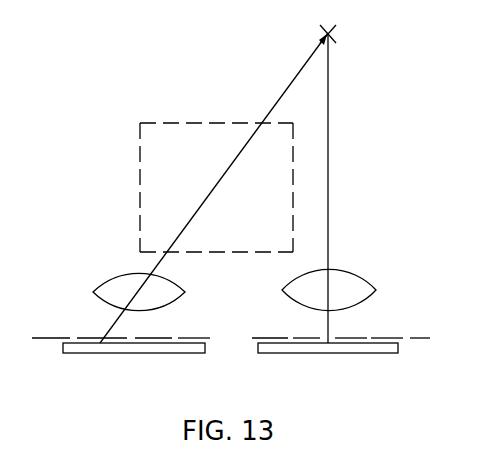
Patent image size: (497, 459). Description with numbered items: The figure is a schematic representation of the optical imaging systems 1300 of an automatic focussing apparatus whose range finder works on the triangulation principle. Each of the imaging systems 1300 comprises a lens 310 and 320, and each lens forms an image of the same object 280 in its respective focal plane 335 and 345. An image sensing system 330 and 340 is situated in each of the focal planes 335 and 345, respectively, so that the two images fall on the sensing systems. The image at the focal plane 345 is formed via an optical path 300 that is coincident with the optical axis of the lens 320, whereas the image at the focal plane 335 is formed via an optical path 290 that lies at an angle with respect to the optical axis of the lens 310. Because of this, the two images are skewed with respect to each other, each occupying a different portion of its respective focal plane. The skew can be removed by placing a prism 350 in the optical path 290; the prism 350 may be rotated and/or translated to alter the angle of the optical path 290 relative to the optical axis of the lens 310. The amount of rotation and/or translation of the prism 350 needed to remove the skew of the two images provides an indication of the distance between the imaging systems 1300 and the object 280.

The object 280 is at (334, 32).
The optical path 290 is at (157, 263).
The optical path 300 is at (329, 165).
The lens 310 is at (172, 283).
The lens 320 is at (352, 272).
The image sensing system 330 is at (166, 342).
The focal plane 335 is at (53, 337).
The image sensing system 340 is at (372, 342).
The focal plane 345 is at (418, 338).
The prism 350 is at (150, 141).
The optical imaging systems 1300 is at (250, 392).